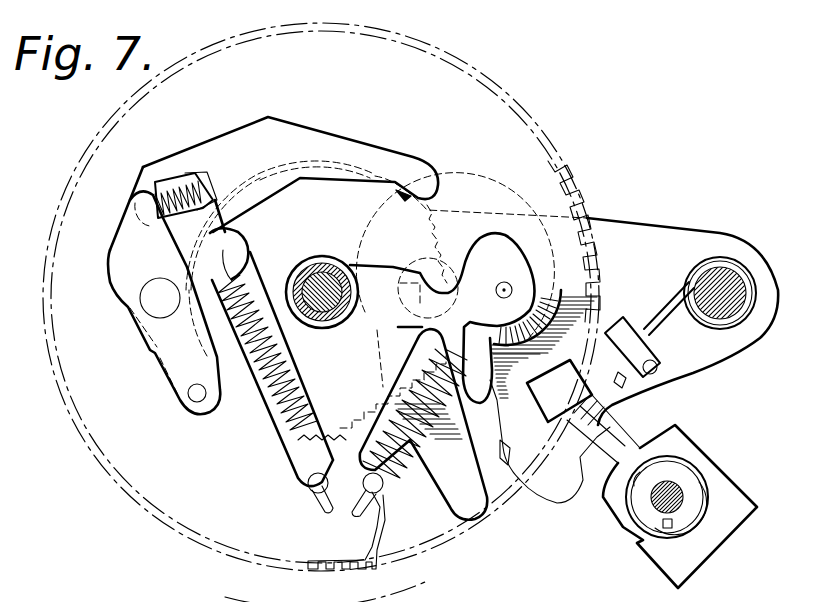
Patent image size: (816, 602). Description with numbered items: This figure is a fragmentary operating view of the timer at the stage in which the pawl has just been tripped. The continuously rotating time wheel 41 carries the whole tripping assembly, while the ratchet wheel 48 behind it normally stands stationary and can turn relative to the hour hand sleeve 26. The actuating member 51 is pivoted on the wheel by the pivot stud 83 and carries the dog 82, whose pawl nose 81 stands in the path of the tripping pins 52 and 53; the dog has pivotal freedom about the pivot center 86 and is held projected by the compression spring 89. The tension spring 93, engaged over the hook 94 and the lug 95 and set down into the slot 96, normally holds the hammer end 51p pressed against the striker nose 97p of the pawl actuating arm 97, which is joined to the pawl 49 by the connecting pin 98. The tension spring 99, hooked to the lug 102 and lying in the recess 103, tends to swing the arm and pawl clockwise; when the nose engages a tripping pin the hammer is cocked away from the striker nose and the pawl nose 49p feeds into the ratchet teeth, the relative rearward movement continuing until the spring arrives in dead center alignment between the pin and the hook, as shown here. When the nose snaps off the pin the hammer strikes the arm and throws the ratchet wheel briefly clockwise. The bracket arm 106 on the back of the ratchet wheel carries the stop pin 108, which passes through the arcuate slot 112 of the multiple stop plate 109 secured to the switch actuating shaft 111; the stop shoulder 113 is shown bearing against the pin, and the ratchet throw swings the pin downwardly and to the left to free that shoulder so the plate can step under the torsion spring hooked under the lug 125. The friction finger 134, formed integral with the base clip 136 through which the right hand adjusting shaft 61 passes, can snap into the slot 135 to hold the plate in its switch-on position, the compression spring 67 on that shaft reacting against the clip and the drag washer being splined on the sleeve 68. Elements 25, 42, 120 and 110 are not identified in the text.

The time wheel 41 is at (99, 142).
The ratchet wheel 48 is at (442, 210).
The actuating member 51 is at (210, 152).
The hammer end 51p is at (378, 207).
The tripping pin 53 is at (292, 63).
The tripping pin 52 is at (92, 326).
The pawl nose 81 is at (116, 308).
The dog 82 is at (125, 232).
The pivot stud 83 is at (170, 308).
The pivot center 86 is at (192, 396).
The compression spring 89 is at (170, 196).
The tension spring 93 is at (300, 378).
The hook 94 is at (240, 242).
The lug 95 is at (322, 508).
The slot 96 is at (285, 447).
The shaft 25 is at (322, 290).
The bushing 42 is at (316, 286).
The hour hand sleeve 26 is at (326, 326).
The pawl actuating arm 97 is at (505, 250).
The striker nose 97p is at (352, 266).
The connecting pin 98 is at (512, 284).
The bracket arm 106 is at (462, 256).
The stop shoulder 113 is at (506, 357).
The stop pin 108 is at (490, 395).
The recess 103 is at (395, 378).
The pawl nose 49p is at (355, 356).
The pawl 49 is at (566, 318).
The arcuate slot 112 is at (480, 447).
The tension spring 99 is at (402, 502).
The lug 102 is at (366, 510).
The multiple stop plate 109 is at (625, 226).
The switch actuating shaft 111 is at (718, 272).
The rod 120 is at (660, 300).
The lug 125 is at (648, 352).
The slot 135 is at (612, 396).
The friction finger 134 is at (565, 512).
The base clip 136 is at (717, 537).
The compression spring 67 is at (706, 495).
The adjusting shaft 61 is at (680, 490).
The sleeve 68 is at (690, 508).
The lever 110 is at (504, 445).